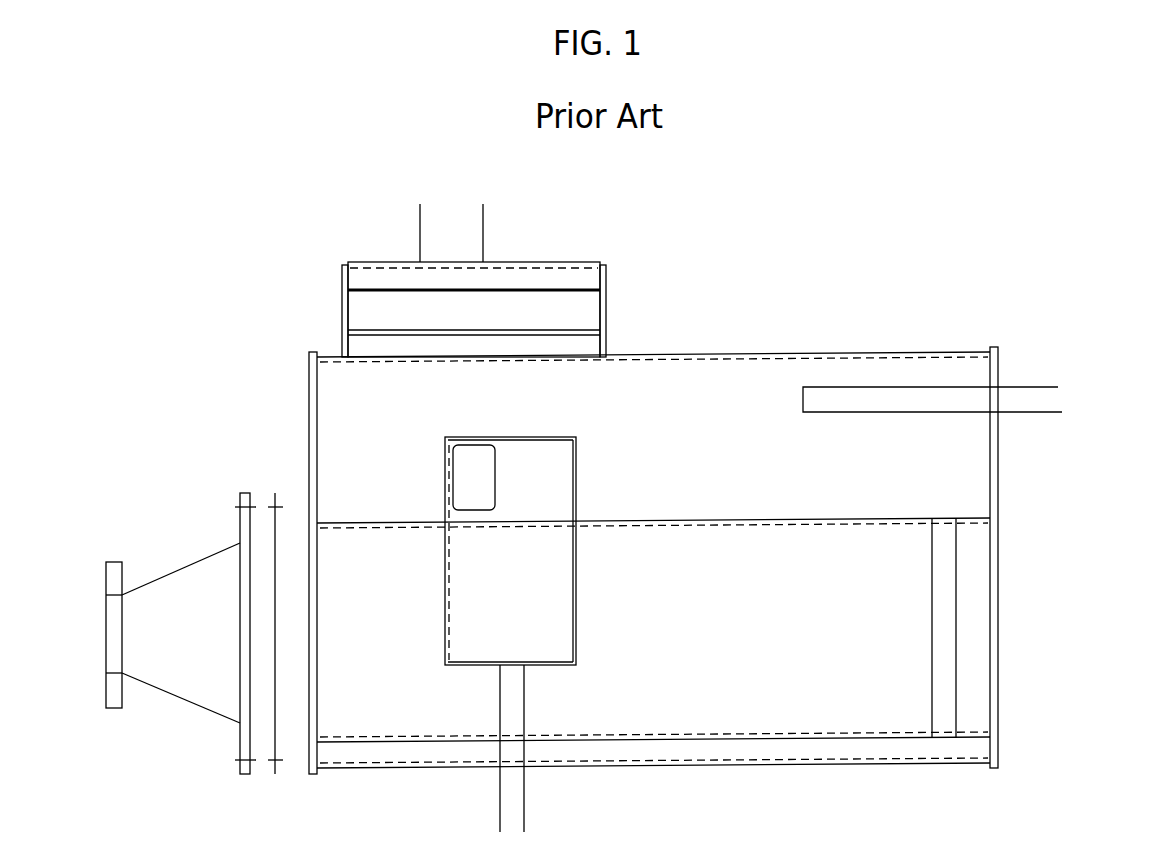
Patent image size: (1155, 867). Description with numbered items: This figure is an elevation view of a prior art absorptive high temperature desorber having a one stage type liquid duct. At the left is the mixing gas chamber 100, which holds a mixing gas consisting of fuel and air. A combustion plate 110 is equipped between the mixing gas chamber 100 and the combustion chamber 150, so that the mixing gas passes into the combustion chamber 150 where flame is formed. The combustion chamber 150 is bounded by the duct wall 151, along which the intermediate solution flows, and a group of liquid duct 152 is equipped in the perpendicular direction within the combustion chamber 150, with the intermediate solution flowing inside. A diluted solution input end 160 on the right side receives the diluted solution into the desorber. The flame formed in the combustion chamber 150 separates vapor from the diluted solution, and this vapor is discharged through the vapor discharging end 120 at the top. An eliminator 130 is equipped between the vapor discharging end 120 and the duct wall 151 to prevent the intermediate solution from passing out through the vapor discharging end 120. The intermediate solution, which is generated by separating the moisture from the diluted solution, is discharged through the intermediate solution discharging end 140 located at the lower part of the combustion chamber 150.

The mixing gas chamber 100 is at (193, 563).
The combustion plate 110 is at (275, 480).
The vapor discharging end 120 is at (483, 233).
The eliminator 130 is at (560, 310).
The intermediate solution discharging end 140 is at (495, 617).
The combustion chamber 150 is at (795, 643).
The duct wall 151 is at (712, 450).
The liquid duct 152 is at (945, 610).
The diluted solution input end 160 is at (1028, 387).